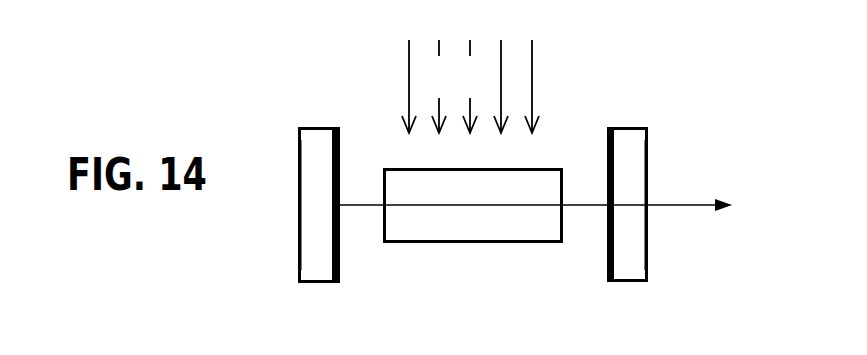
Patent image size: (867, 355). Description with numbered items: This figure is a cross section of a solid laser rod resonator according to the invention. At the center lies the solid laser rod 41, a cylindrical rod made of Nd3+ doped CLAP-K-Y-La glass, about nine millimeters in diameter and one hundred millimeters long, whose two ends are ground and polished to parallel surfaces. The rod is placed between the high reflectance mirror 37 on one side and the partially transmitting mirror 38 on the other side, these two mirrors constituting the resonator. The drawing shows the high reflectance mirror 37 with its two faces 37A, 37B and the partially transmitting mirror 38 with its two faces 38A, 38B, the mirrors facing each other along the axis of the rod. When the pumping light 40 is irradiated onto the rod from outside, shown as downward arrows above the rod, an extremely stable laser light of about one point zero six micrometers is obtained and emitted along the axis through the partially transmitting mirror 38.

The high reflectance mirror 37 is at (314, 96).
The outer surface of first mirror 37A is at (310, 230).
The reflective coating of first mirror 37B is at (340, 260).
The partially transmitting mirror 38 is at (630, 94).
The outer surface of second mirror 38A is at (635, 247).
The reflective coating of second mirror 38B is at (607, 267).
The pumping light 40 is at (470, 86).
The solid laser rod 41 is at (430, 243).